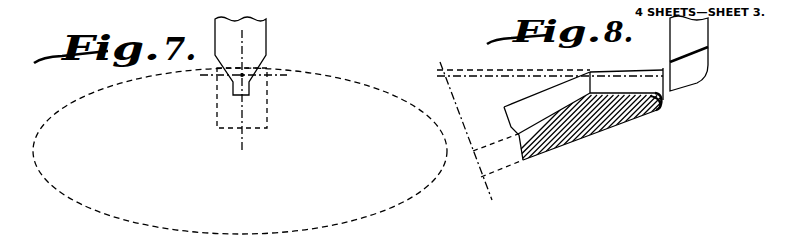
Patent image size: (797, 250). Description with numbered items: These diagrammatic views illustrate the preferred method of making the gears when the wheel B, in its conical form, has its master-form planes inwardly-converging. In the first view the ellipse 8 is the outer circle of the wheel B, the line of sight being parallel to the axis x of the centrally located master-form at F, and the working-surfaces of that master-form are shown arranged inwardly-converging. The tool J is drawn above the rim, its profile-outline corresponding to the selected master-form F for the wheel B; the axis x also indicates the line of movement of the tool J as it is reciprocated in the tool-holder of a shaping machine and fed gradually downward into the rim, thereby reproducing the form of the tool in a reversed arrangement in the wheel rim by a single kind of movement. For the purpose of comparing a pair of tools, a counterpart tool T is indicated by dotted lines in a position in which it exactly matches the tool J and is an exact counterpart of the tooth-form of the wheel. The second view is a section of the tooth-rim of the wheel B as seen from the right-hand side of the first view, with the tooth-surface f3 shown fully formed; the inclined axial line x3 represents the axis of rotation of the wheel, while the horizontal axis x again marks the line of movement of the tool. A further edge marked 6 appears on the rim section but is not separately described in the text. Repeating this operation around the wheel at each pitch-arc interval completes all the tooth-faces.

In FIG. 7, the ellipse 8 is at (352, 81).
In FIG. 8, the ellipse 8 is at (663, 70).
In FIG. 7, the tool J is at (260, 36).
In FIG. 8, the tool J is at (700, 30).
In FIG. 7, the axis x is at (242, 75).
In FIG. 8, the axis x is at (508, 77).
In FIG. 7, the counterpart tool T is at (267, 115).
In FIG. 7, the master-form F is at (217, 100).
In FIG. 8, the axial line x3 is at (488, 188).
In FIG. 8, the wheel B is at (582, 123).
In FIG. 8, the blade edge 6 is at (590, 72).
In FIG. 8, the tooth-surface f3 is at (656, 110).